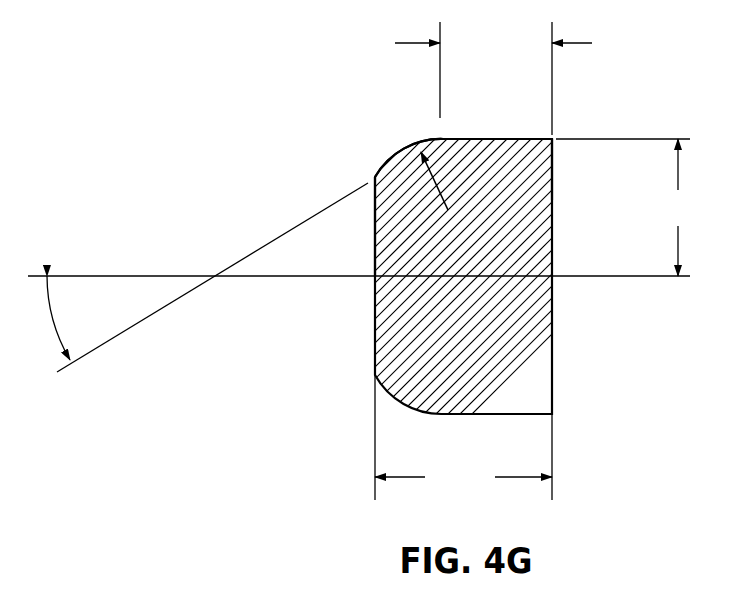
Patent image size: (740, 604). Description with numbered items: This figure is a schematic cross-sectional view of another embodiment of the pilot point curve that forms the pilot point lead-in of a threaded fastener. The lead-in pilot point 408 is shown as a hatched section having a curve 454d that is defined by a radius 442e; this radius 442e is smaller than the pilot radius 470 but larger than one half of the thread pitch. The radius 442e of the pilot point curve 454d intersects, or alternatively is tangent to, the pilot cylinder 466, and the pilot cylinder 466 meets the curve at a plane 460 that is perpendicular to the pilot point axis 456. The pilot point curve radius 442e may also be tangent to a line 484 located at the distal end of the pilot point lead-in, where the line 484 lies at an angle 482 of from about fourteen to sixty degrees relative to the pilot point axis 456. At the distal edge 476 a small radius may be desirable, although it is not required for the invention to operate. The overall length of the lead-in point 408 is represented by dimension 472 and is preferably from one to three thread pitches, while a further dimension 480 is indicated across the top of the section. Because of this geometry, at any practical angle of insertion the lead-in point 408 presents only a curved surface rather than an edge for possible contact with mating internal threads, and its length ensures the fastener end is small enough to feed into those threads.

The lead-in pilot point 408 is at (407, 322).
The radius of the pilot point curve 442e is at (420, 151).
The pilot point curve 454d is at (443, 139).
The pilot point axis 456 is at (605, 277).
The plane 460 is at (556, 172).
The pilot cylinder 466 is at (487, 414).
The pilot radius 470 is at (630, 207).
The length of the lead-in point 472 is at (463, 437).
The edge 476 is at (375, 177).
The top width dimension 480 is at (493, 78).
The angle 482 is at (77, 318).
The line 484 is at (143, 320).